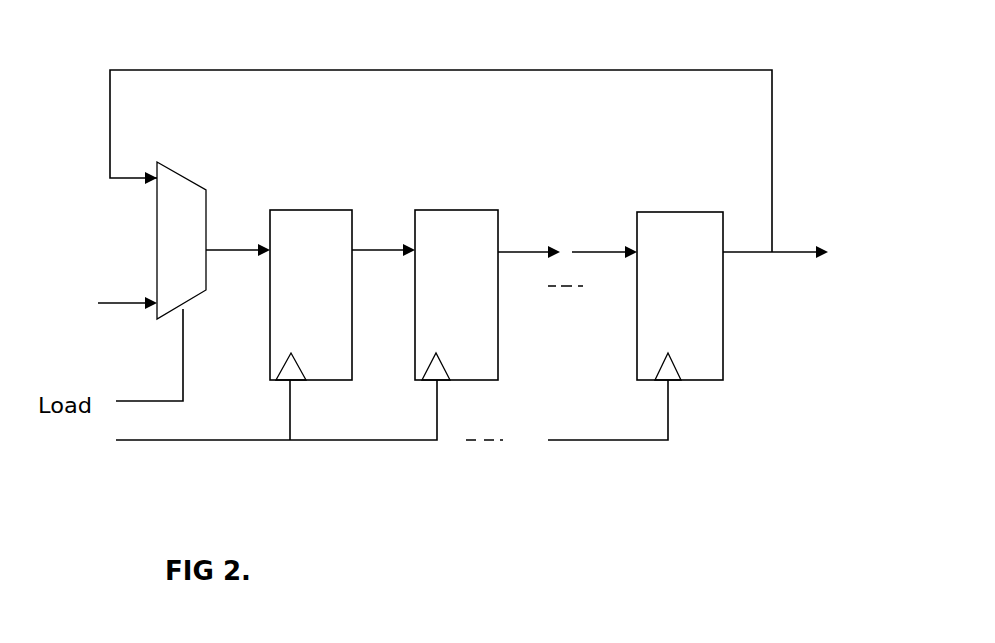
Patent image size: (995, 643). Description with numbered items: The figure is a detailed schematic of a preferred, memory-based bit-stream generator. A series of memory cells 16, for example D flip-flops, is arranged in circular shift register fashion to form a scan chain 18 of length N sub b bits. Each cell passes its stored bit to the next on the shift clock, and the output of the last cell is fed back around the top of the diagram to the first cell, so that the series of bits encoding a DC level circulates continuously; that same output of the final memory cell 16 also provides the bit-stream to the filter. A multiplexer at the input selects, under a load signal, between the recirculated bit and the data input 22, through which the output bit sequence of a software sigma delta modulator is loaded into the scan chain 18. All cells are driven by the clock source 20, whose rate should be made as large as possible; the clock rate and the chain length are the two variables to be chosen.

The scan chain 18 is at (248, 50).
The memory cells 16 is at (725, 200).
The data input 22 is at (60, 298).
The clock source 20 is at (81, 452).